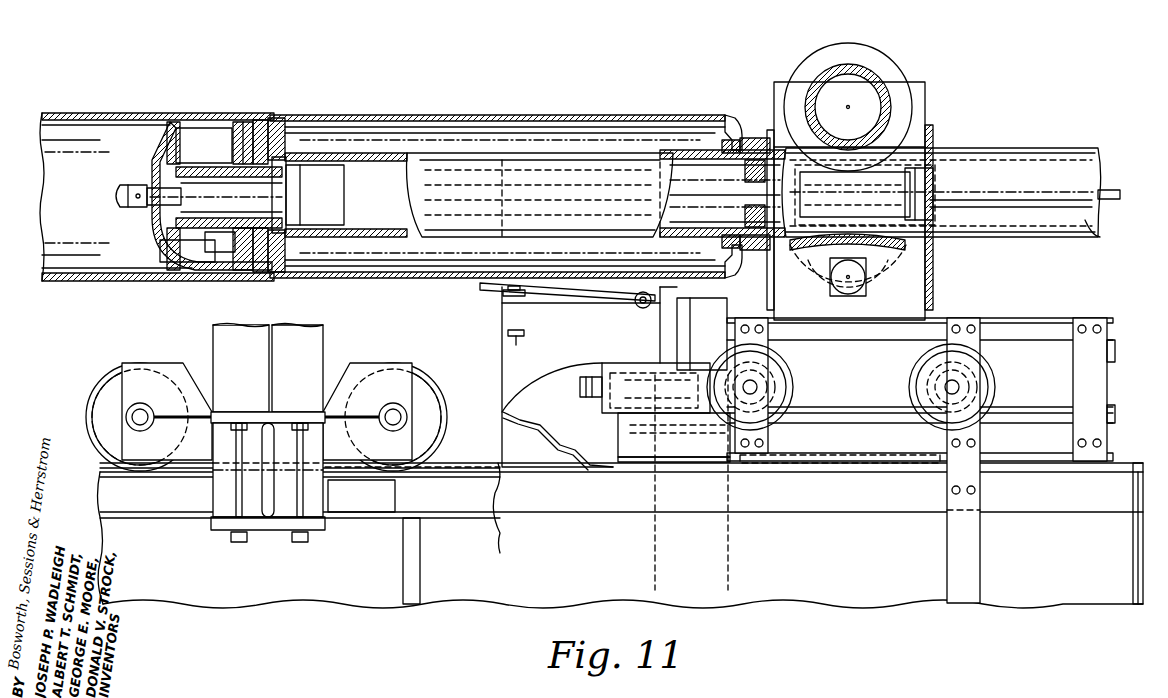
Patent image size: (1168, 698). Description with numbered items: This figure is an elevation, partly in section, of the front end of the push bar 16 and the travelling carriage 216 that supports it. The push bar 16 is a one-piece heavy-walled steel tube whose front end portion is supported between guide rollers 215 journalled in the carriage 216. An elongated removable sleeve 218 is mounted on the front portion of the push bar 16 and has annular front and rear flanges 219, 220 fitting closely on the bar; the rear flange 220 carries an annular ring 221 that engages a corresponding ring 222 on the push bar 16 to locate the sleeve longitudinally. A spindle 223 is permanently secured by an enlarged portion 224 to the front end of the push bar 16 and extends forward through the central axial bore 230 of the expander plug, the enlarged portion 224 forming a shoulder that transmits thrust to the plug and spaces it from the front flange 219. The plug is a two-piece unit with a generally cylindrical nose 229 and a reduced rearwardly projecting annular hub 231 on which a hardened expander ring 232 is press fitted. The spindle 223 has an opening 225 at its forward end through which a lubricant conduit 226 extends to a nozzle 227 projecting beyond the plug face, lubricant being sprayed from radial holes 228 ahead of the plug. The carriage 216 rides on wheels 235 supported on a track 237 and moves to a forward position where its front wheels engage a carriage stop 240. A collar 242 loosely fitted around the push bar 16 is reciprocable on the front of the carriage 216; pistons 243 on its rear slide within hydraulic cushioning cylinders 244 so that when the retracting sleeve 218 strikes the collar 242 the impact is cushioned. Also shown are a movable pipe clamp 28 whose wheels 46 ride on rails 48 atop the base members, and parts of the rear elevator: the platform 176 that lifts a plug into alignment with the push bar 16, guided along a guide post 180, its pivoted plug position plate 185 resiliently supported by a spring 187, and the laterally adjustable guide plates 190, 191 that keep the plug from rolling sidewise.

The push bar 16 is at (955, 148).
The pipe clamp 28 is at (208, 352).
The wheels 46 is at (108, 385).
The rails 48 is at (450, 465).
The elevator platform 176 is at (565, 345).
The guide post 180 is at (700, 310).
The plug position plate 185 is at (598, 288).
The spring 187 is at (503, 296).
The guide plate 190 is at (518, 360).
The guide plate 191 is at (545, 480).
The guide rollers 215 is at (872, 62).
The travelling carriage 216 is at (786, 82).
The sleeve 218 is at (530, 117).
The front flange 219 is at (280, 160).
The rear flange 220 is at (742, 138).
The annular ring 221 is at (727, 142).
The ring 222 is at (722, 193).
The spindle 223 is at (205, 168).
The enlarged portion 224 is at (278, 275).
The opening 225 is at (160, 246).
The lubricant conduit 226 is at (383, 152).
The nozzle 227 is at (158, 187).
The radial holes 228 is at (128, 208).
The nose 229 is at (190, 140).
The central axial bore 230 is at (216, 228).
The annular hub 231 is at (262, 123).
The expander ring 232 is at (262, 124).
The carriage wheels 235 is at (910, 385).
The track 237 is at (852, 412).
The carriage stop 240 is at (692, 415).
The collar 242 is at (770, 250).
The pistons 243 is at (915, 125).
The hydraulic cushioning cylinders 244 is at (905, 130).